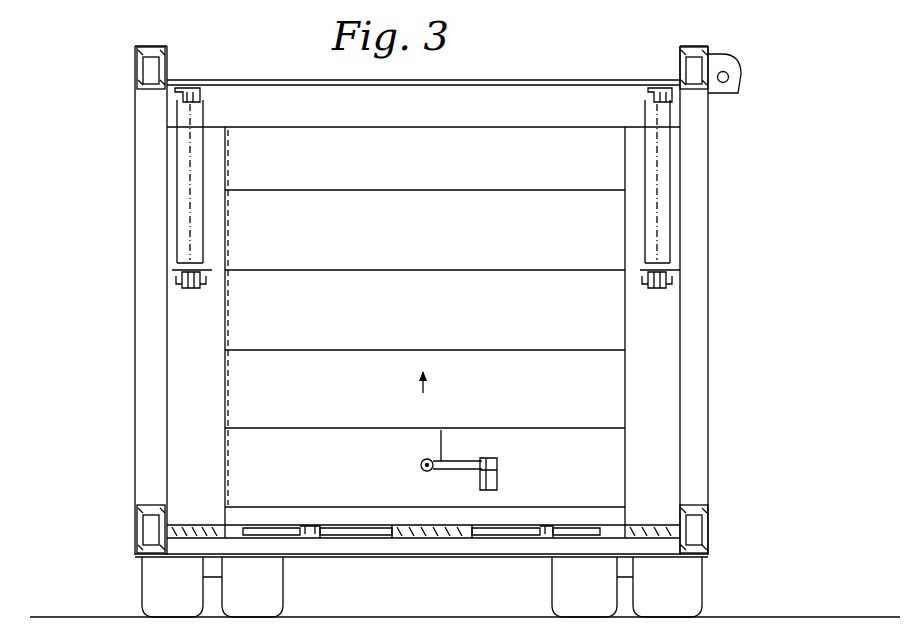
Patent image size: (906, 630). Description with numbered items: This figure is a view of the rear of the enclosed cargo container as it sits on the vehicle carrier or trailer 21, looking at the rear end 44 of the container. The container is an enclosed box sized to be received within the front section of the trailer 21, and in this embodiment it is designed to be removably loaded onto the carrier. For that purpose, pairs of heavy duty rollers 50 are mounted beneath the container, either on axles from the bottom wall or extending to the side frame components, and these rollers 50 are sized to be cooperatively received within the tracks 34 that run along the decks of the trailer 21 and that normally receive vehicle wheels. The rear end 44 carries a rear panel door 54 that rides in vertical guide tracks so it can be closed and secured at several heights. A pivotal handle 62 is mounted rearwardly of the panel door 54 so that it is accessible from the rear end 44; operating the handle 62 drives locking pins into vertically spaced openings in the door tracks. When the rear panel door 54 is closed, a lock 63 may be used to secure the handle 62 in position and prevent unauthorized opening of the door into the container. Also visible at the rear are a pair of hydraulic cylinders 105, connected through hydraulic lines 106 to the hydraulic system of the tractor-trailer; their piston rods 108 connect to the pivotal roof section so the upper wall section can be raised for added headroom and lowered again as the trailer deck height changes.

The vehicle carrier or trailer 21 is at (134, 582).
The tracks 34 is at (308, 527).
The rear end 44 is at (653, 402).
The heavy duty rollers 50 is at (268, 527).
The rear panel door 54 is at (236, 342).
The pivotal handle 62 is at (472, 452).
The lock 63 is at (493, 480).
The hydraulic cylinders 105 is at (180, 218).
The hydraulic lines 106 is at (173, 250).
The piston rods 108 is at (190, 105).